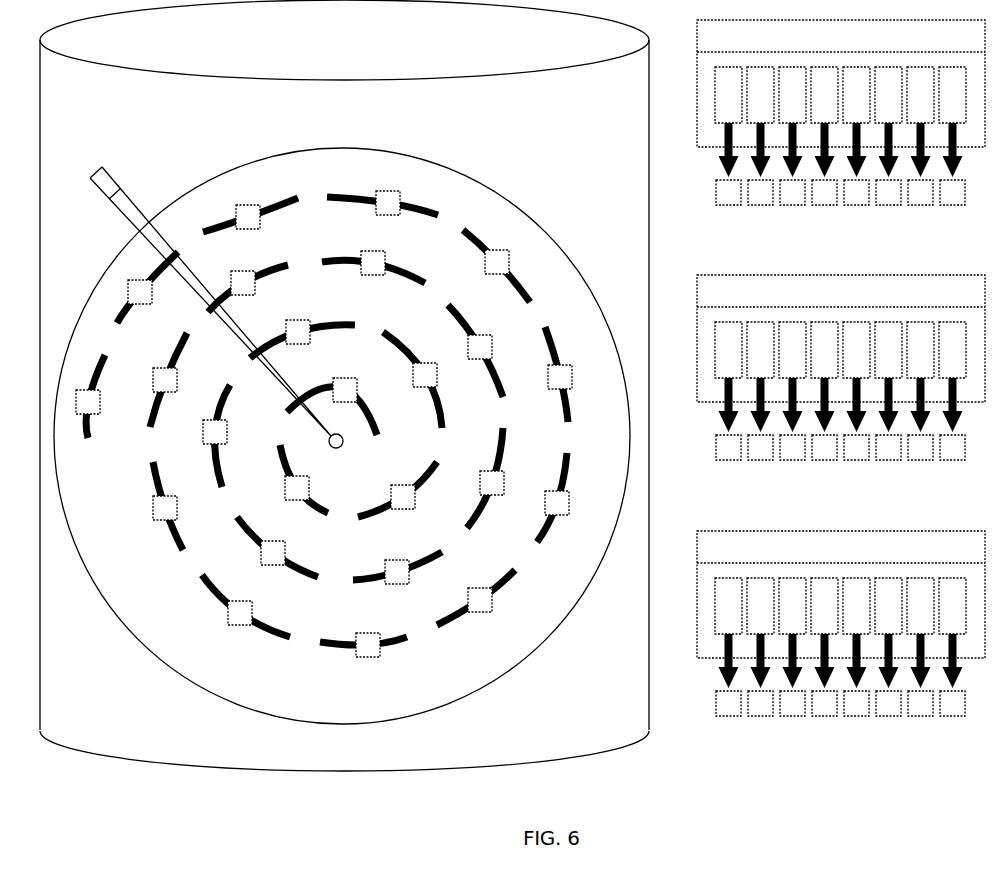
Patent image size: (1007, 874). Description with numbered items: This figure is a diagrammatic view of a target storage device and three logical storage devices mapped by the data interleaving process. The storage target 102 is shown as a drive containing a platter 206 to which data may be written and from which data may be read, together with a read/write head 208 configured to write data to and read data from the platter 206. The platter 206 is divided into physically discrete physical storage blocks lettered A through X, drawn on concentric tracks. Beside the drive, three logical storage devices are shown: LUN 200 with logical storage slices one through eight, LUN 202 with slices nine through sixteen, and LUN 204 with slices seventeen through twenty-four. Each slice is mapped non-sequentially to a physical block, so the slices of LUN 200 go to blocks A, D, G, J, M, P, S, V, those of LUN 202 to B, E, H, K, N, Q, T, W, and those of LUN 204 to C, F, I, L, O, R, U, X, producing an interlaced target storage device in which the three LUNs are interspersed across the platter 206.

The storage target 102 is at (344, 385).
The platter 206 is at (555, 246).
The read/write head 208 is at (116, 193).
The LUN 200 is at (841, 112).
The LUN 202 is at (841, 367).
The LUN 204 is at (841, 623).